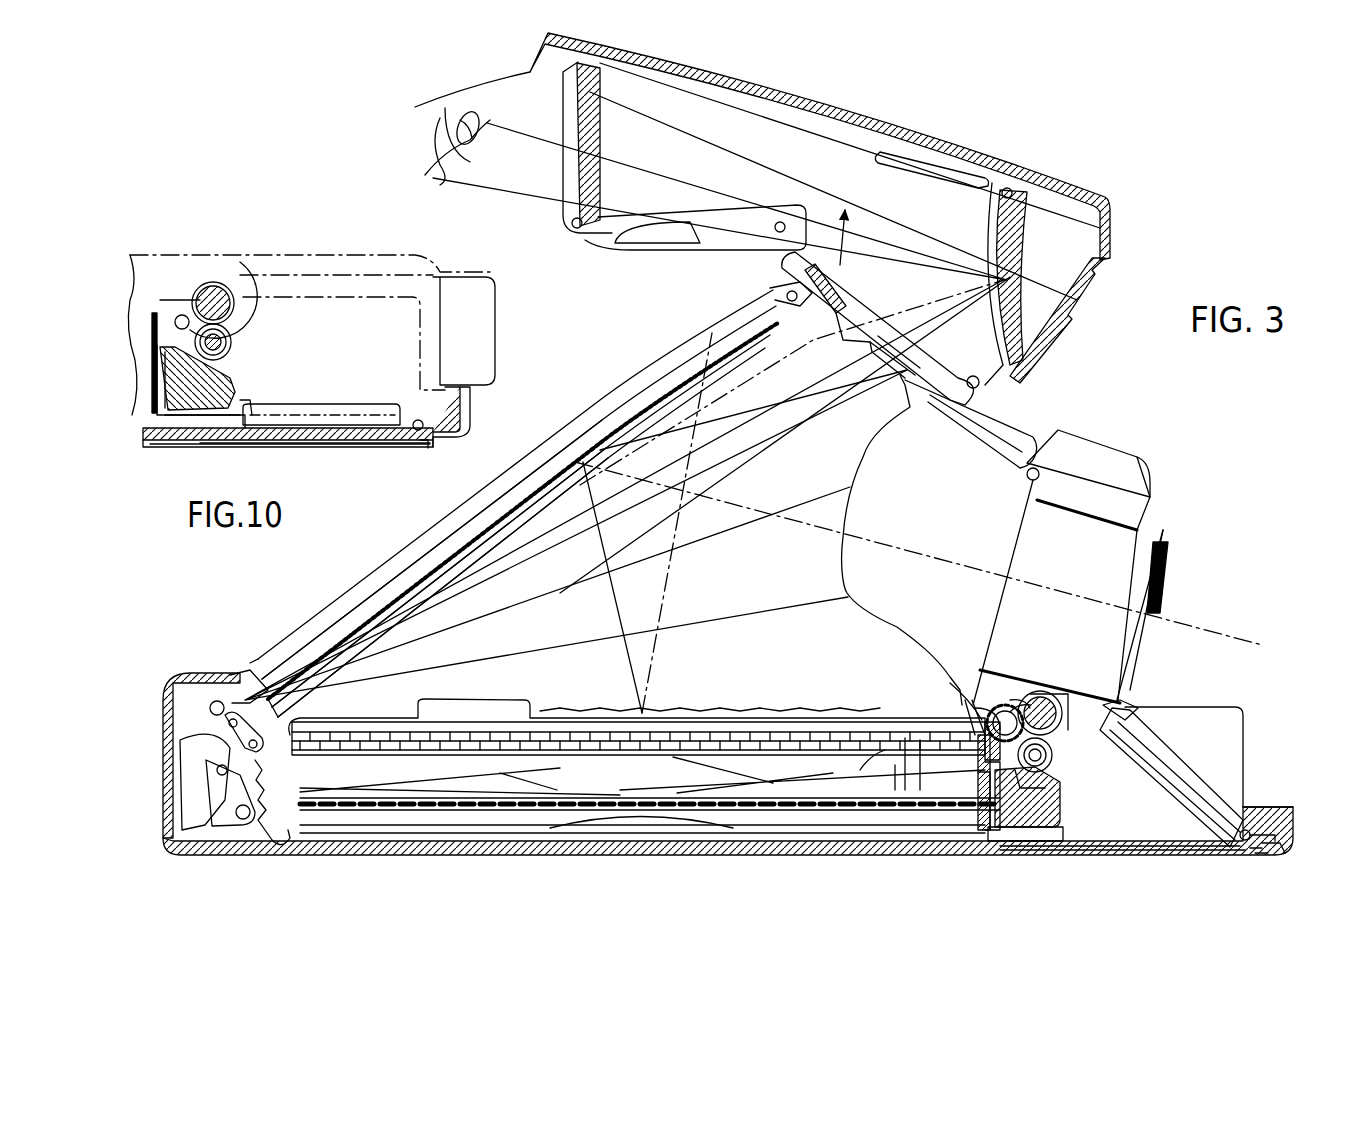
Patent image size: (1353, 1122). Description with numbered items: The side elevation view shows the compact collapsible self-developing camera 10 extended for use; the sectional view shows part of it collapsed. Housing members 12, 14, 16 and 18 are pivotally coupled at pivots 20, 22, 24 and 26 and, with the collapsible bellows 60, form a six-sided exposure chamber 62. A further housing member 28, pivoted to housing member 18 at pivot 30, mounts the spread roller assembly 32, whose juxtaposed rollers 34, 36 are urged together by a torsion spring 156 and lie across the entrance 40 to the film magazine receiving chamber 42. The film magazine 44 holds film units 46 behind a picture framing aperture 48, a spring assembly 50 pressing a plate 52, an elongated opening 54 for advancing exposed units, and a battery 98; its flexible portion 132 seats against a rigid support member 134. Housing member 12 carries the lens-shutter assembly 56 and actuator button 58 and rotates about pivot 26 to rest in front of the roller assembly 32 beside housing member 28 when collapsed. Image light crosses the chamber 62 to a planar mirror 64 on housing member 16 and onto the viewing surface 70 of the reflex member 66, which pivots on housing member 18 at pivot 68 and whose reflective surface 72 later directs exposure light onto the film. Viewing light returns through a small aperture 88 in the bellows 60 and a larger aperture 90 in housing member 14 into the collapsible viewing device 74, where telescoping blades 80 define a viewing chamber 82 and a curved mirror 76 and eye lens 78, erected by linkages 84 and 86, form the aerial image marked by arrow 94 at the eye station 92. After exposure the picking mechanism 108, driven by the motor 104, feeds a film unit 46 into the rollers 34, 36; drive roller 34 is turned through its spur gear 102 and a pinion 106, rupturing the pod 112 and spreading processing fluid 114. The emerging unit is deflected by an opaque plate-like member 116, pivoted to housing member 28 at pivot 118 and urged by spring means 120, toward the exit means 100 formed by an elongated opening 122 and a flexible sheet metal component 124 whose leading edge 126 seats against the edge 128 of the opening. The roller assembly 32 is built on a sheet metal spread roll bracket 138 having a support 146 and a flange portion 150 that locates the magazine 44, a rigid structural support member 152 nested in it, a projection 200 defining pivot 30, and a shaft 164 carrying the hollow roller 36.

In FIG. 3, the camera 10 is at (1205, 437).
In FIG. 3, the housing member 12 is at (963, 683).
In FIG. 3, the housing member 14 is at (1028, 450).
In FIG. 3, the housing member 16 is at (312, 625).
In FIG. 3, the housing member 18 is at (308, 850).
In FIG. 10, the housing member 18 is at (286, 447).
In FIG. 3, the pivot 20 is at (1043, 470).
In FIG. 3, the pivot 22 is at (775, 290).
In FIG. 3, the pivot 24 is at (217, 701).
In FIG. 3, the pivot 26 is at (1130, 708).
In FIG. 3, the housing member 28 is at (1282, 855).
In FIG. 10, the housing member 28 is at (468, 428).
In FIG. 3, the pivot 30 is at (985, 740).
In FIG. 10, the pivot 30 is at (185, 298).
In FIG. 3, the spread roller assembly 32 is at (1075, 778).
In FIG. 3, the roller 34 is at (1062, 700).
In FIG. 10, the roller 34 is at (212, 282).
In FIG. 3, the roller 36 is at (1055, 750).
In FIG. 10, the roller 36 is at (240, 290).
In FIG. 3, the entrance 40 is at (985, 834).
In FIG. 3, the film magazine receiving chamber 42 is at (492, 836).
In FIG. 3, the film magazine 44 is at (380, 813).
In FIG. 10, the film magazine 44 is at (143, 300).
In FIG. 3, the film units 46 is at (970, 700).
In FIG. 3, the picture framing aperture 48 is at (830, 725).
In FIG. 3, the spring assembly 50 is at (440, 794).
In FIG. 3, the plate 52 is at (340, 757).
In FIG. 3, the elongated opening 54 is at (1000, 705).
In FIG. 3, the lens-shutter assembly 56 is at (1150, 536).
In FIG. 10, the lens-shutter assembly 56 is at (300, 290).
In FIG. 3, the actuator button 58 is at (1163, 582).
In FIG. 3, the collapsible bellows 60 is at (980, 452).
In FIG. 3, the exposure chamber 62 is at (685, 405).
In FIG. 3, the planar mirror 64 is at (372, 612).
In FIG. 3, the reflex member 66 is at (550, 482).
In FIG. 3, the pivot 68 is at (185, 748).
In FIG. 3, the viewing surface 70 is at (523, 495).
In FIG. 3, the planar light reflective surface 72 is at (630, 440).
In FIG. 3, the collapsible viewing device 74 is at (858, 110).
In FIG. 3, the curved mirror 76 is at (1070, 215).
In FIG. 3, the eye lens 78 is at (578, 117).
In FIG. 3, the telescoping blades 80 is at (822, 145).
In FIG. 3, the viewing chamber 82 is at (943, 170).
In FIG. 3, the linkage 84 is at (1012, 192).
In FIG. 3, the linkage 86 is at (708, 228).
In FIG. 3, the small aperture 88 is at (838, 338).
In FIG. 3, the larger aperture 90 is at (895, 360).
In FIG. 3, the eye station 92 is at (487, 163).
In FIG. 3, the arrow 94 is at (836, 236).
In FIG. 3, the battery 98 is at (320, 805).
In FIG. 3, the exit means 100 is at (1232, 862).
In FIG. 10, the exit means 100 is at (432, 455).
In FIG. 3, the spur gear 102 is at (1040, 694).
In FIG. 3, the motor 104 is at (175, 680).
In FIG. 3, the pinion 106 is at (1015, 710).
In FIG. 3, the picking mechanism 108 is at (410, 712).
In FIG. 3, the pod 112 is at (925, 735).
In FIG. 3, the processing fluid 114 is at (908, 735).
In FIG. 3, the plate-like member 116 is at (1245, 800).
In FIG. 10, the plate-like member 116 is at (322, 408).
In FIG. 3, the pivot 118 is at (1213, 757).
In FIG. 3, the spring means 120 is at (1270, 830).
In FIG. 3, the elongated opening 122 is at (1210, 850).
In FIG. 10, the elongated opening 122 is at (380, 448).
In FIG. 3, the sheet metal component 124 is at (1215, 857).
In FIG. 10, the sheet metal component 124 is at (318, 448).
In FIG. 3, the leading edge 126 is at (1262, 860).
In FIG. 10, the leading edge 126 is at (423, 452).
In FIG. 3, the edge 128 is at (1248, 858).
In FIG. 10, the edge 128 is at (412, 445).
In FIG. 3, the portion 132 is at (870, 740).
In FIG. 3, the rigid support member 134 is at (900, 740).
In FIG. 3, the spread roll bracket 138 is at (1066, 822).
In FIG. 10, the spread roll bracket 138 is at (178, 420).
In FIG. 3, the support 146 is at (1020, 830).
In FIG. 3, the flange portion 150 is at (985, 825).
In FIG. 10, the flange portion 150 is at (163, 400).
In FIG. 3, the rigid structural support member 152 is at (1063, 806).
In FIG. 10, the rigid structural support member 152 is at (205, 418).
In FIG. 3, the torsion spring 156 is at (1050, 793).
In FIG. 10, the shaft 164 is at (222, 342).
In FIG. 3, the projection 200 is at (805, 728).
In FIG. 10, the projection 200 is at (188, 265).